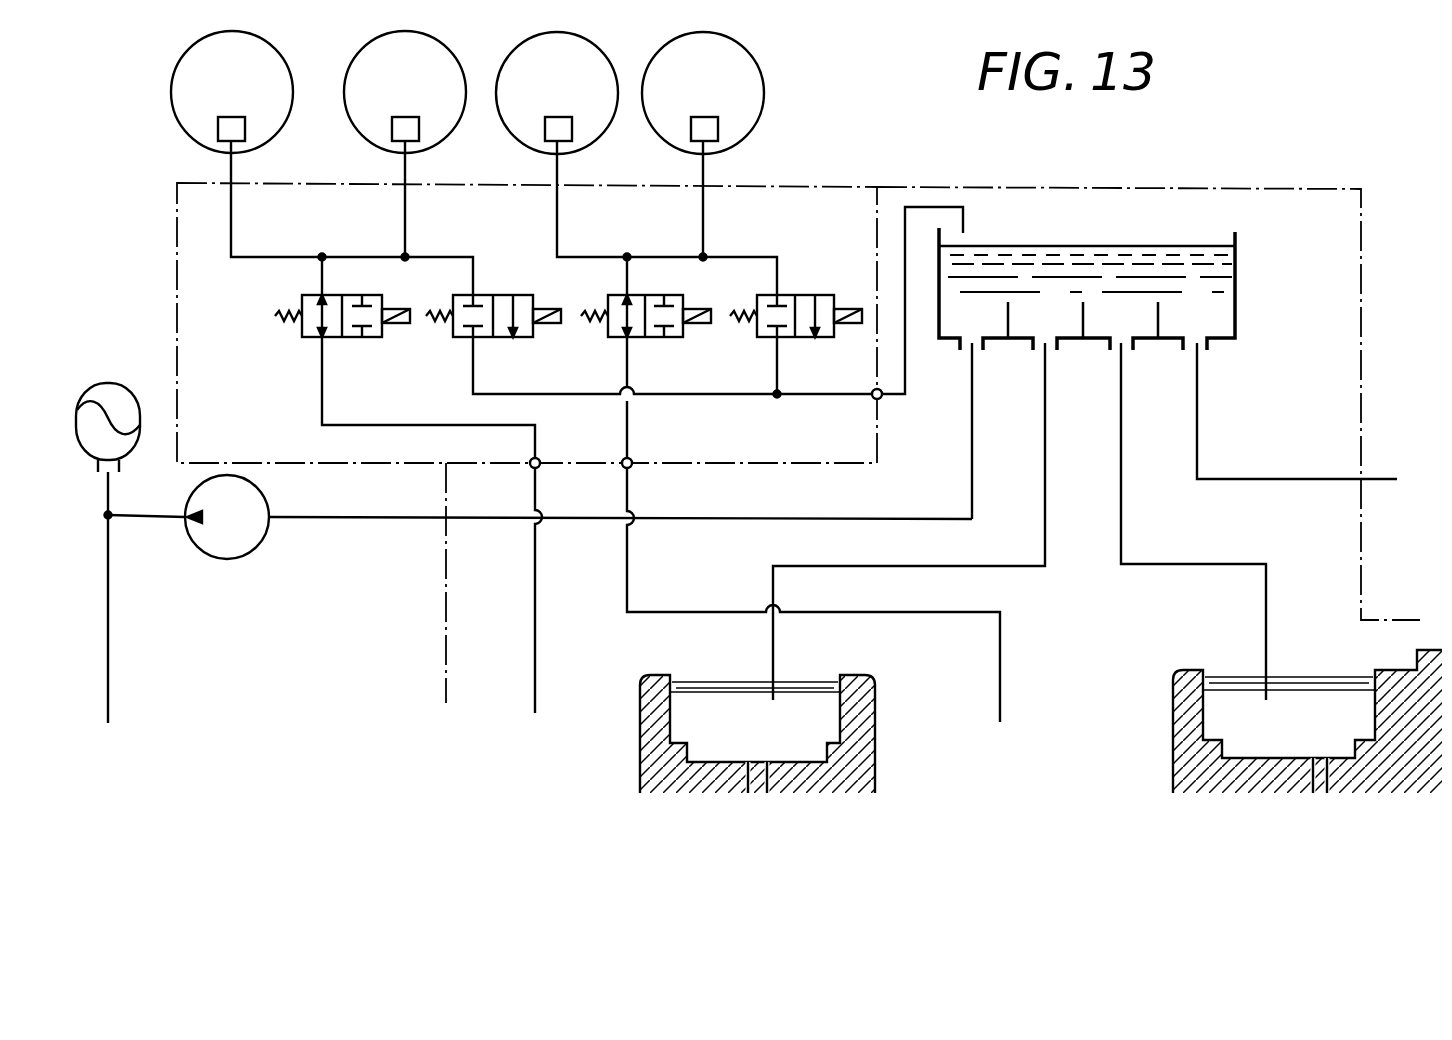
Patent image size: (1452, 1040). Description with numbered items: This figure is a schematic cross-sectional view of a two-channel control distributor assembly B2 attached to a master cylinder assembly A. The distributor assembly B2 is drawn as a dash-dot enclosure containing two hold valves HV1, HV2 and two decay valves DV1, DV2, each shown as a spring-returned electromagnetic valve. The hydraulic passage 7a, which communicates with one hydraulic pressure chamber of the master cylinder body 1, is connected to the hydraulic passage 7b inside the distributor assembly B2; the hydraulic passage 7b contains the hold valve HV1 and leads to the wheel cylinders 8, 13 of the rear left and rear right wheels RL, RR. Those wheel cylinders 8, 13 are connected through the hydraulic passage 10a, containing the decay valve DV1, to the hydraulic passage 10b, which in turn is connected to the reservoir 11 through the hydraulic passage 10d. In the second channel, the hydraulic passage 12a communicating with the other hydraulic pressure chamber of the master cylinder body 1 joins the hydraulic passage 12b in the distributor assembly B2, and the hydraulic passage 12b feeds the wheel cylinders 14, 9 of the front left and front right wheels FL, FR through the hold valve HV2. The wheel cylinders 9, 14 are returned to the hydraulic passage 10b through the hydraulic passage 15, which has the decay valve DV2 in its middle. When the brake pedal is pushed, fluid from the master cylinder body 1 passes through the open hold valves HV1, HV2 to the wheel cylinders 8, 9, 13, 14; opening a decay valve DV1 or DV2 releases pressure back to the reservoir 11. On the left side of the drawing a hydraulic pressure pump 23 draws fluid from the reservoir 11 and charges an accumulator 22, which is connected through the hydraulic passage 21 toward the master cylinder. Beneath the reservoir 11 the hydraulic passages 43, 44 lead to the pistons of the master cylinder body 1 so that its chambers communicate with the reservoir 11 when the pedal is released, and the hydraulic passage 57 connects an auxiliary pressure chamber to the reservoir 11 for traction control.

The master cylinder body 1 is at (875, 710).
The hydraulic passage 7a is at (627, 573).
The hydraulic passage 7b is at (627, 440).
The wheel cylinder 8 is at (545, 127).
The wheel cylinder 9 is at (392, 127).
The hydraulic passage 10a is at (742, 257).
The hydraulic passage 10b is at (818, 394).
The hydraulic passage 10d is at (928, 205).
The reservoir 11 is at (1237, 282).
The hydraulic passage 12a is at (535, 642).
The hydraulic passage 12b is at (320, 383).
The wheel cylinder 13 is at (691, 127).
The wheel cylinder 14 is at (218, 127).
The hydraulic passage 15 is at (477, 268).
The hydraulic passage 21 is at (108, 680).
The accumulator 22 is at (118, 383).
The hydraulic pressure pump 23 is at (268, 536).
The hydraulic passage 43 is at (1262, 607).
The hydraulic passage 44 is at (760, 585).
The hydraulic passage 57 is at (1375, 478).
The master cylinder assembly A is at (1362, 318).
The distributor assembly B2 is at (826, 185).
The hold valve HV1 is at (646, 333).
The hold valve HV2 is at (342, 333).
The decay valve DV1 is at (796, 333).
The decay valve DV2 is at (493, 333).
The front left wheel FL is at (232, 92).
The front right wheel FR is at (405, 92).
The rear left wheel RL is at (557, 93).
The rear right wheel RR is at (703, 93).